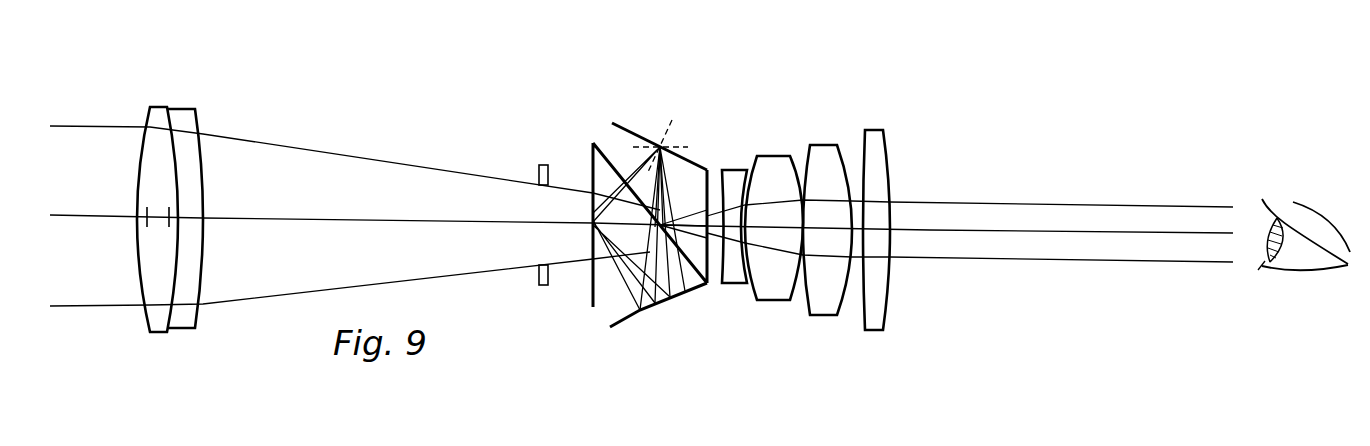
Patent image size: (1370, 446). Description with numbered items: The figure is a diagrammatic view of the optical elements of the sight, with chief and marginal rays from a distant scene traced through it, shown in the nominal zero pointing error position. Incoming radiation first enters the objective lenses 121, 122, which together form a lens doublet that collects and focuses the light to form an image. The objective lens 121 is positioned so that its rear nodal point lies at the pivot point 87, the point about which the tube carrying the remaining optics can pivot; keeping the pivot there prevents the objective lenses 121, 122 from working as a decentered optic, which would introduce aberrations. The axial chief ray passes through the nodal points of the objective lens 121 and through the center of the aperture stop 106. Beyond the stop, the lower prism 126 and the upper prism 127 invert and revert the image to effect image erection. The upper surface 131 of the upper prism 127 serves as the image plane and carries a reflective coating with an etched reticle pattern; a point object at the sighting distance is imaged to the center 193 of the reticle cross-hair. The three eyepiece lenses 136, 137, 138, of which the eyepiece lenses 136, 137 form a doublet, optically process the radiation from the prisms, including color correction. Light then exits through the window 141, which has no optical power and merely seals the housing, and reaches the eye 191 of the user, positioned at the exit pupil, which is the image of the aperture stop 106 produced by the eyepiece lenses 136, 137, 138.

The objective lens 121 is at (157, 107).
The objective lens 122 is at (183, 108).
The pivot point 87 is at (170, 223).
The aperture stop 106 is at (546, 165).
The upper surface 131 is at (632, 130).
The center of the reticle cross-hair 193 is at (658, 145).
The upper prism 127 is at (710, 171).
The lower prism 126 is at (633, 325).
The eyepiece lens 136 is at (737, 286).
The eyepiece lens 137 is at (772, 302).
The eyepiece lens 138 is at (823, 144).
The window 141 is at (875, 128).
The eye 191 is at (1298, 268).